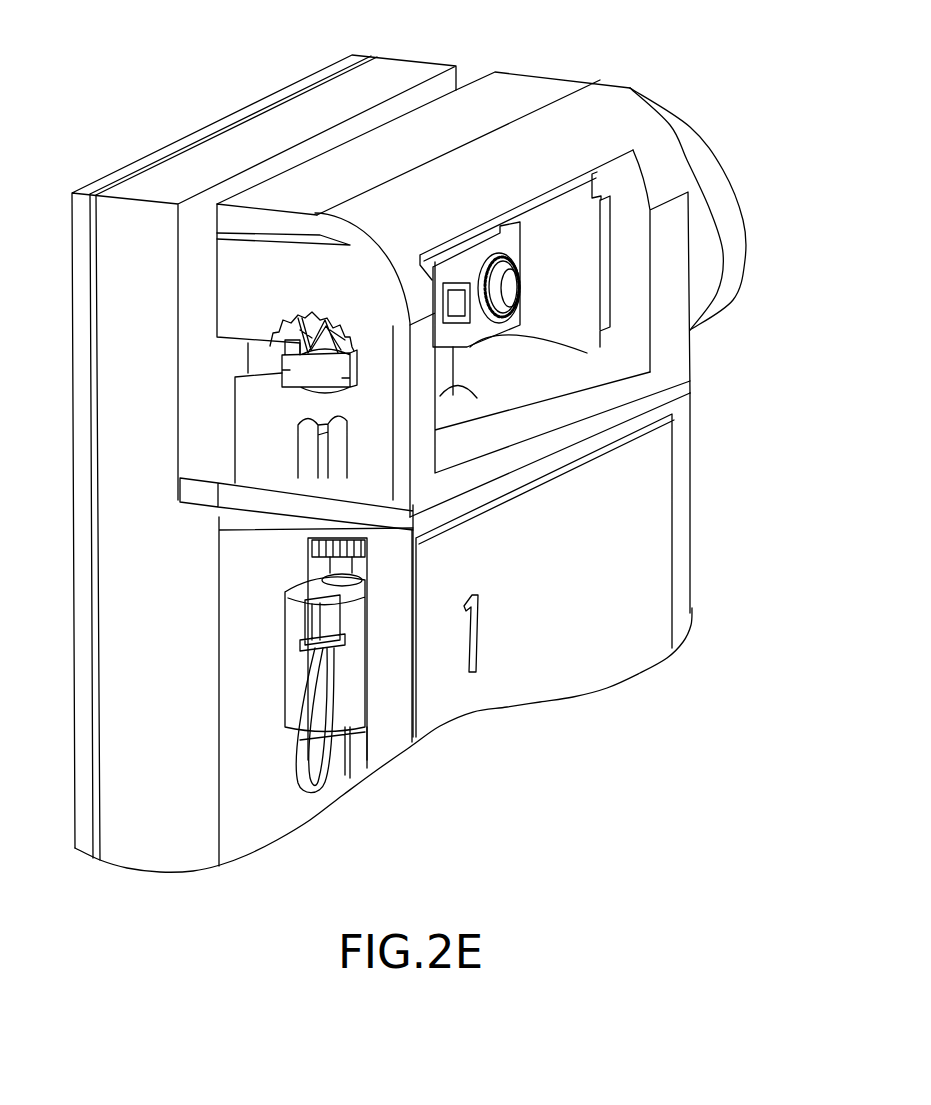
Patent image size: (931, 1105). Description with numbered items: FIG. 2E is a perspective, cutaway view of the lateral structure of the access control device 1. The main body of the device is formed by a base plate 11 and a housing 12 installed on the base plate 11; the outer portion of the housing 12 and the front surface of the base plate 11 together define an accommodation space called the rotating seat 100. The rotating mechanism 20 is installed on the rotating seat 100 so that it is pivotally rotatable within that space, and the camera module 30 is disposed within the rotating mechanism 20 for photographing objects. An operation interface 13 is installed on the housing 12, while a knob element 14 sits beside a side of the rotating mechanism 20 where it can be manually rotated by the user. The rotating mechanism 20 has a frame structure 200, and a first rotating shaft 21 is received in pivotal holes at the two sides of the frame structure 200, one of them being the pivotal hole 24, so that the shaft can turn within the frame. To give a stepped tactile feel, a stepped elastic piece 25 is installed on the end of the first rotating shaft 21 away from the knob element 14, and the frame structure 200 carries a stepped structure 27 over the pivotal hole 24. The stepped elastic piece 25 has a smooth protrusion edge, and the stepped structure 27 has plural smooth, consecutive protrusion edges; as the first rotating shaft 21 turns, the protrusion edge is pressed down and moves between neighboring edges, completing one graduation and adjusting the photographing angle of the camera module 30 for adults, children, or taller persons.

The access control device 1 is at (123, 57).
The rotating seat 100 is at (317, 148).
The base plate 11 is at (90, 553).
The rotating mechanism 20 is at (520, 85).
The frame structure 200 is at (627, 123).
The knob element 14 is at (733, 213).
The camera module 30 is at (467, 270).
The stepped structure 27 is at (310, 318).
The stepped elastic piece 25 is at (340, 330).
The pivotal hole 24 is at (262, 358).
The first rotating shaft 21 is at (308, 368).
The operation interface 13 is at (652, 493).
The housing 12 is at (682, 553).